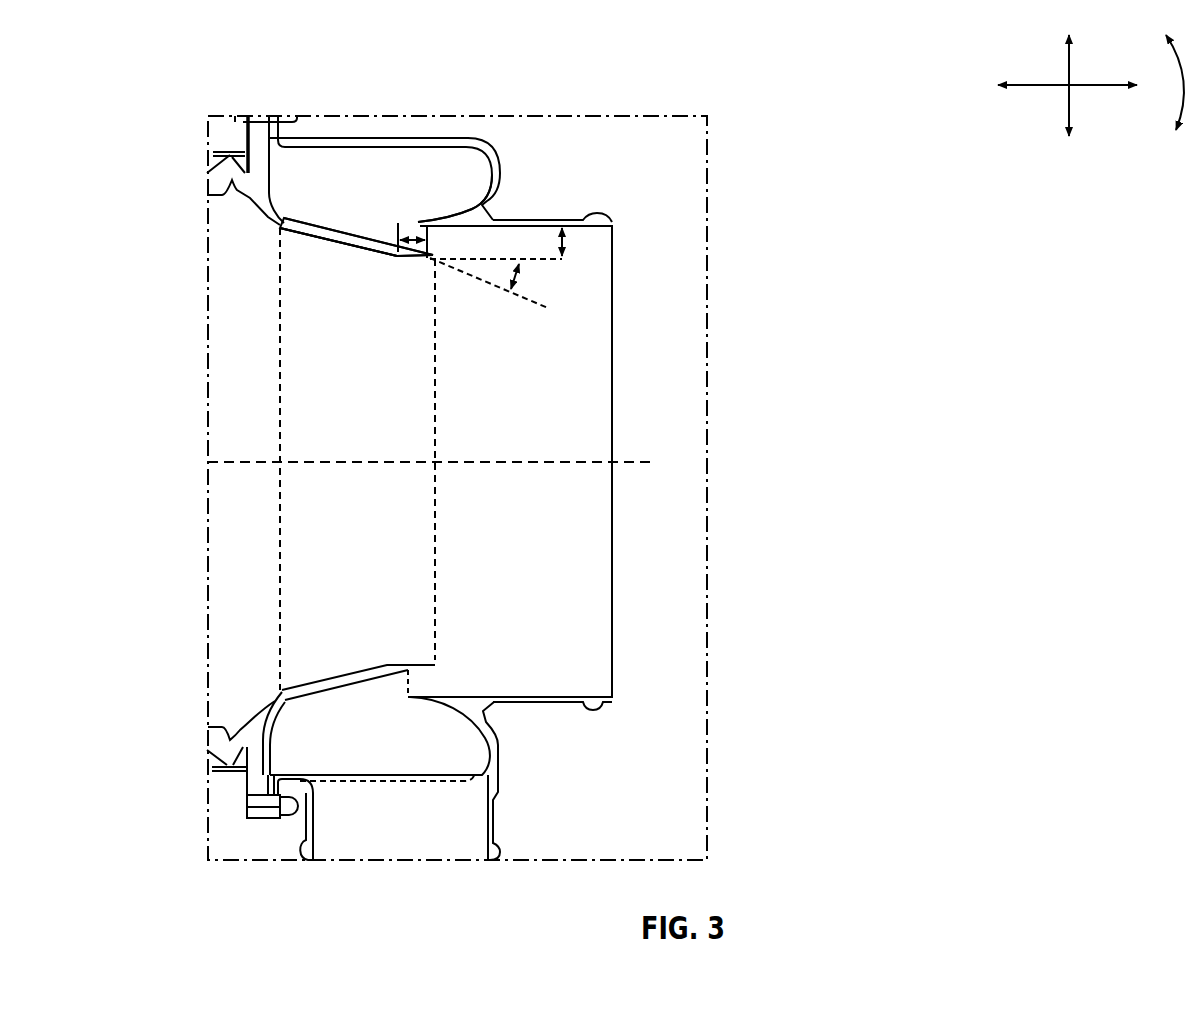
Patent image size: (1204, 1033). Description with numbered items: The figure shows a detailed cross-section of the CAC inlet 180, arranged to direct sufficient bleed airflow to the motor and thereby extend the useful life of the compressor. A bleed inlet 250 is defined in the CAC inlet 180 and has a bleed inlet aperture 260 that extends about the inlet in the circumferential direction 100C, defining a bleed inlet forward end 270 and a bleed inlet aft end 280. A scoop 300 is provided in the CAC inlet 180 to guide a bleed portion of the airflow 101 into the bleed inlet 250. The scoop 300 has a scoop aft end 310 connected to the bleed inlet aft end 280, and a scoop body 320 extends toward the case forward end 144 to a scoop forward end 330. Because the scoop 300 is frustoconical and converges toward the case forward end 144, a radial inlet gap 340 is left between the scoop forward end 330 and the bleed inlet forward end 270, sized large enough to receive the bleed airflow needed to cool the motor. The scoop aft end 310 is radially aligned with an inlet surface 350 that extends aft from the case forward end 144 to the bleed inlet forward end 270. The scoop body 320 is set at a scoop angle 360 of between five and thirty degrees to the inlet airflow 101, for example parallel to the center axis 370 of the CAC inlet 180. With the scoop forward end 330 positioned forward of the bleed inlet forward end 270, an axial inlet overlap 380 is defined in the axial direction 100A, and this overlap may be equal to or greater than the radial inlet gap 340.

The airflow 101 is at (803, 454).
The CAC inlet 180 is at (803, 327).
The axial direction 100A is at (1033, 90).
The circumferential direction 100C is at (1186, 102).
The case forward end 144 is at (612, 598).
The bleed inlet 250 is at (494, 664).
The bleed inlet aperture 260 is at (306, 180).
The bleed inlet forward end 270 is at (409, 223).
The bleed inlet aft end 280 is at (272, 215).
The scoop 300 is at (374, 252).
The scoop aft end 310 is at (315, 236).
The scoop body 320 is at (342, 233).
The scoop forward end 330 is at (378, 250).
The radial inlet gap 340 is at (567, 247).
The inlet surface 350 is at (530, 226).
The scoop angle 360 is at (522, 277).
The center axis 370 is at (627, 462).
The axial inlet overlap 380 is at (419, 223).